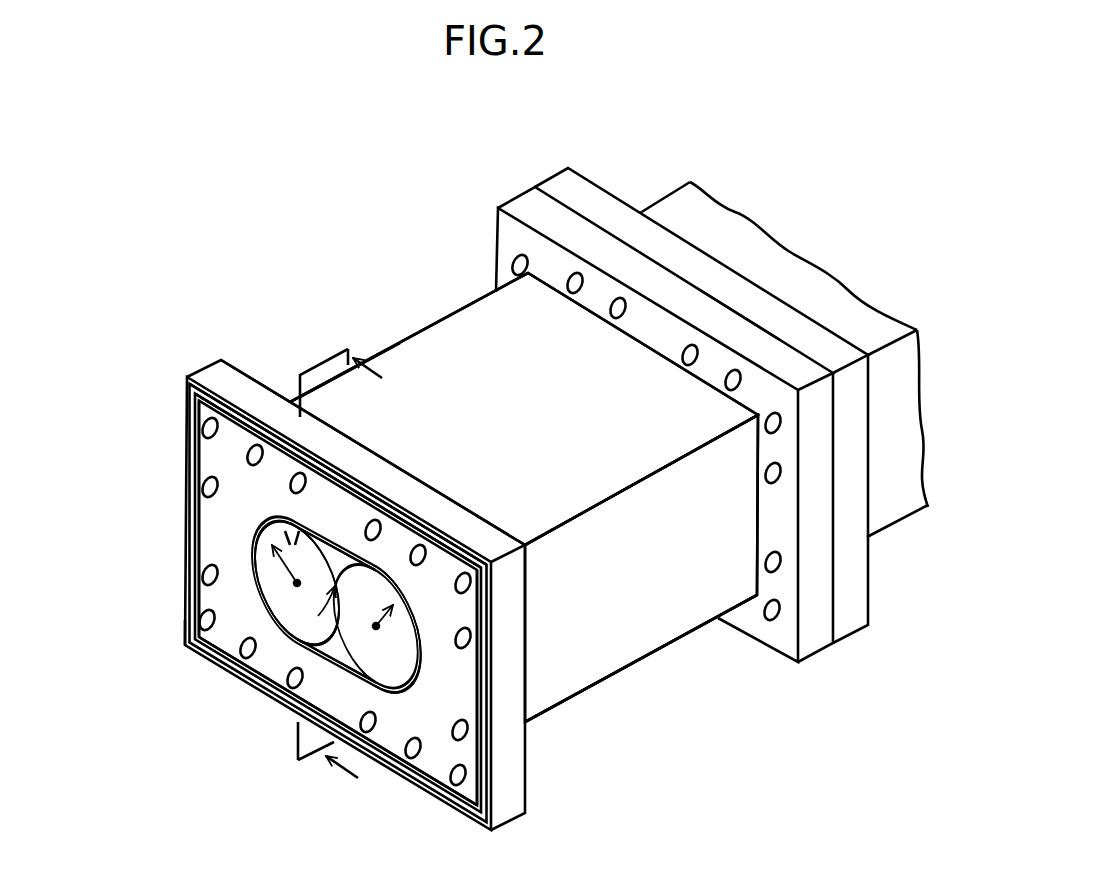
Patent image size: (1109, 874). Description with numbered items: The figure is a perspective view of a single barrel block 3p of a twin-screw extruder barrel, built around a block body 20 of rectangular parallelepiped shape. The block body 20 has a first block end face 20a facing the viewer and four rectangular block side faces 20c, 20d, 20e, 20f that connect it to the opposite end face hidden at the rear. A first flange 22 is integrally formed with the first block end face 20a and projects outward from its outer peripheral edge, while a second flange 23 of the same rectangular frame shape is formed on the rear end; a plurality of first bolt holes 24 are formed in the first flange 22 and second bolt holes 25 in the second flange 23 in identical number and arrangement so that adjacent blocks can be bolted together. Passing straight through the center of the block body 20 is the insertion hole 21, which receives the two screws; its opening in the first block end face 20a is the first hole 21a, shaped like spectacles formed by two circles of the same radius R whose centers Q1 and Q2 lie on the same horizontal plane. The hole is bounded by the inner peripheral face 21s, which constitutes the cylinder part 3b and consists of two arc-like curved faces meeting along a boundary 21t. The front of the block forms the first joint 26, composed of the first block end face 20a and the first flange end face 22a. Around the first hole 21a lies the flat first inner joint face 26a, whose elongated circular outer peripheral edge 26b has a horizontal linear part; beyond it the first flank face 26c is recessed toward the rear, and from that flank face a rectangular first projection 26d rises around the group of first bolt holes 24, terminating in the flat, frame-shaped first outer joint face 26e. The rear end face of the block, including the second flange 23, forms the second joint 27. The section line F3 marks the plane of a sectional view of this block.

The barrel block 3p is at (380, 200).
The cylinder part 3b is at (338, 578).
The block body 20 is at (480, 316).
The first block end face 20a is at (248, 590).
The block side face 20c is at (439, 340).
The block side face 20d is at (683, 618).
The block side face 20e is at (635, 663).
The block side face 20f is at (413, 332).
The insertion hole 21 is at (293, 640).
The first hole 21a is at (424, 686).
The inner peripheral face 21s is at (313, 537).
The boundary 21t is at (317, 612).
The first flange 22 is at (212, 370).
The first flange end face 22a is at (228, 640).
The second flange 23 is at (527, 205).
The first bolt holes 24 is at (418, 548).
The second bolt holes 25 is at (733, 378).
The first joint 26 is at (165, 569).
The first inner joint face 26a is at (378, 722).
The outer peripheral edge 26b is at (412, 662).
The first flank face 26c is at (230, 535).
The first projection 26d is at (186, 396).
The first outer joint face 26e is at (192, 433).
The second joint 27 is at (737, 302).
The center of circle Q1 is at (293, 596).
The center of circle Q2 is at (370, 644).
The radius R is at (332, 593).
The section line F3 is at (357, 575).